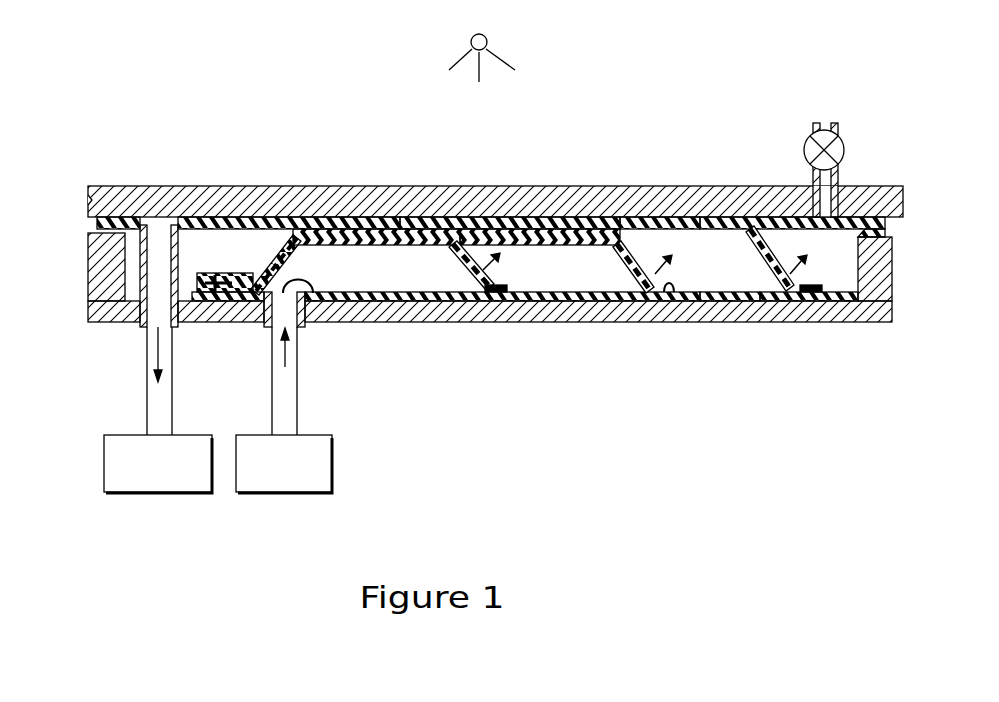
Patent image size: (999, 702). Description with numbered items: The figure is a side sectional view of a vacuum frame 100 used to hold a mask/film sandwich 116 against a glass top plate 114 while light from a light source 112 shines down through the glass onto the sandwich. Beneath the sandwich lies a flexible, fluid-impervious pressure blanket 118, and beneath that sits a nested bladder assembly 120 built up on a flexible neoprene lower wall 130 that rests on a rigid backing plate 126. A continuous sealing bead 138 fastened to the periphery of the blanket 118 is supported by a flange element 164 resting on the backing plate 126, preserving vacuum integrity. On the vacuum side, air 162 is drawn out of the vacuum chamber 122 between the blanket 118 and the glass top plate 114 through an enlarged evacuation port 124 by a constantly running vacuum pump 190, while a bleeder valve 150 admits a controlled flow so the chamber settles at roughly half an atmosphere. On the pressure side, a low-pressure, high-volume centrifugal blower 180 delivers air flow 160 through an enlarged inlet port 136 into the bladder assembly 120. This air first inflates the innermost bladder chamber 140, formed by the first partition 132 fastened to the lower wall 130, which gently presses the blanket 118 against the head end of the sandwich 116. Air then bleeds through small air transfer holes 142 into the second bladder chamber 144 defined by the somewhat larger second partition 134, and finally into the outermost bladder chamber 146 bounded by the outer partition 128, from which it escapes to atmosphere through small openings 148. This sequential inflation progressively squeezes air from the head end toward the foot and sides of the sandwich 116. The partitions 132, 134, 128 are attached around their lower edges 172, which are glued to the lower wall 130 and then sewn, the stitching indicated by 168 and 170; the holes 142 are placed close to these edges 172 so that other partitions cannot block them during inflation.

The vacuum frame 100 is at (259, 112).
The light source 112 is at (490, 38).
The glass top plate 114 is at (207, 186).
The mask/film sandwich 116 is at (350, 217).
The pressure blanket 118 is at (721, 217).
The nested bladder assembly 120 is at (731, 271).
The vacuum chamber 122 is at (662, 217).
The evacuation port 124 is at (157, 273).
The rigid backing plate 126 is at (640, 310).
The outer partition 128 is at (758, 265).
The lower wall 130 is at (390, 300).
The first partition 132 is at (442, 290).
The second partition 134 is at (620, 250).
The inlet port 136 is at (312, 322).
The sealing bead 138 is at (97, 222).
The innermost bladder chamber 140 is at (394, 229).
The air transfer holes 142 is at (492, 296).
The second bladder chamber 144 is at (524, 229).
The outermost bladder chamber 146 is at (720, 295).
The small openings 148 is at (785, 295).
The bleeder valve 150 is at (806, 145).
The air flow 160 is at (284, 346).
The evacuated air 162 is at (157, 345).
The flange element 164 is at (892, 280).
The stitching 168 is at (815, 297).
The stitching 170 is at (207, 314).
The lower edges 172 is at (668, 292).
The centrifugal blower 180 is at (312, 482).
The vacuum pump 190 is at (110, 482).